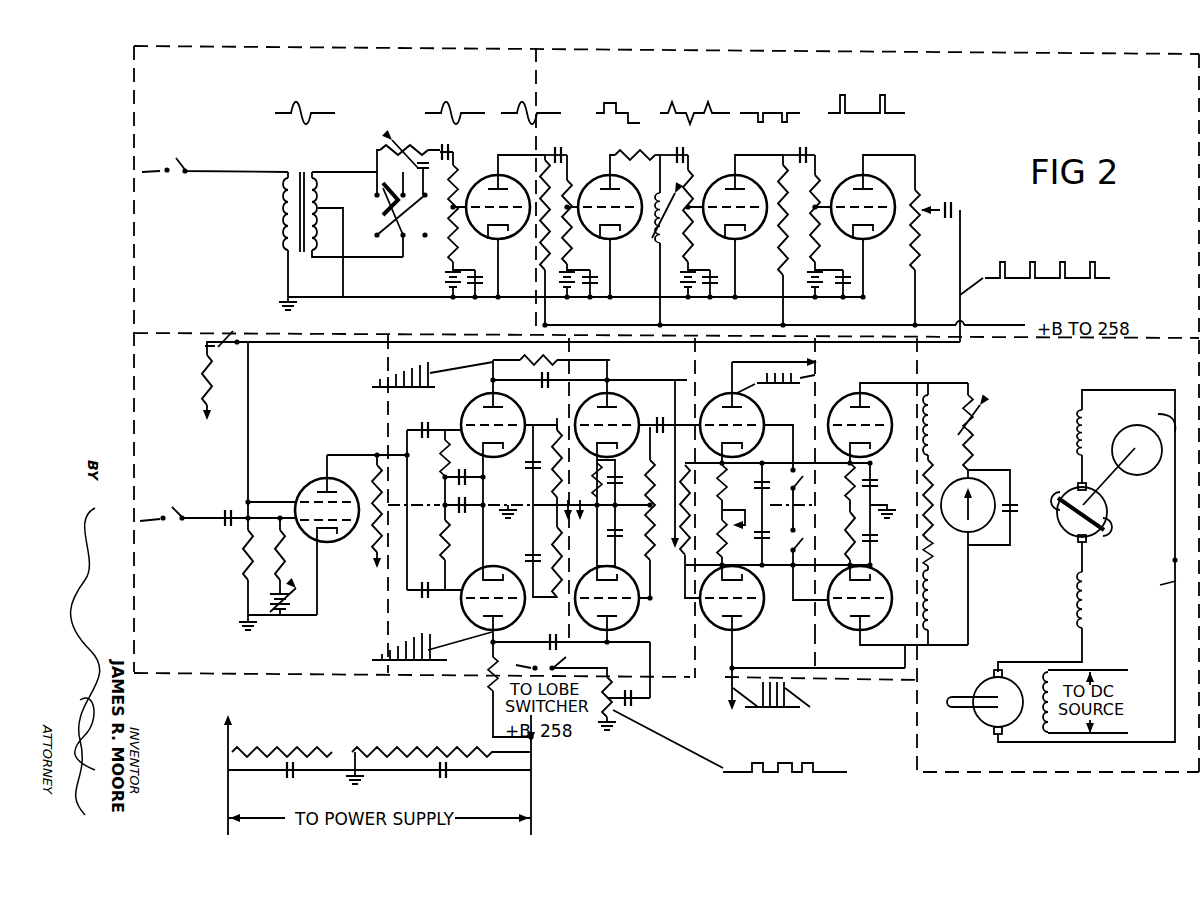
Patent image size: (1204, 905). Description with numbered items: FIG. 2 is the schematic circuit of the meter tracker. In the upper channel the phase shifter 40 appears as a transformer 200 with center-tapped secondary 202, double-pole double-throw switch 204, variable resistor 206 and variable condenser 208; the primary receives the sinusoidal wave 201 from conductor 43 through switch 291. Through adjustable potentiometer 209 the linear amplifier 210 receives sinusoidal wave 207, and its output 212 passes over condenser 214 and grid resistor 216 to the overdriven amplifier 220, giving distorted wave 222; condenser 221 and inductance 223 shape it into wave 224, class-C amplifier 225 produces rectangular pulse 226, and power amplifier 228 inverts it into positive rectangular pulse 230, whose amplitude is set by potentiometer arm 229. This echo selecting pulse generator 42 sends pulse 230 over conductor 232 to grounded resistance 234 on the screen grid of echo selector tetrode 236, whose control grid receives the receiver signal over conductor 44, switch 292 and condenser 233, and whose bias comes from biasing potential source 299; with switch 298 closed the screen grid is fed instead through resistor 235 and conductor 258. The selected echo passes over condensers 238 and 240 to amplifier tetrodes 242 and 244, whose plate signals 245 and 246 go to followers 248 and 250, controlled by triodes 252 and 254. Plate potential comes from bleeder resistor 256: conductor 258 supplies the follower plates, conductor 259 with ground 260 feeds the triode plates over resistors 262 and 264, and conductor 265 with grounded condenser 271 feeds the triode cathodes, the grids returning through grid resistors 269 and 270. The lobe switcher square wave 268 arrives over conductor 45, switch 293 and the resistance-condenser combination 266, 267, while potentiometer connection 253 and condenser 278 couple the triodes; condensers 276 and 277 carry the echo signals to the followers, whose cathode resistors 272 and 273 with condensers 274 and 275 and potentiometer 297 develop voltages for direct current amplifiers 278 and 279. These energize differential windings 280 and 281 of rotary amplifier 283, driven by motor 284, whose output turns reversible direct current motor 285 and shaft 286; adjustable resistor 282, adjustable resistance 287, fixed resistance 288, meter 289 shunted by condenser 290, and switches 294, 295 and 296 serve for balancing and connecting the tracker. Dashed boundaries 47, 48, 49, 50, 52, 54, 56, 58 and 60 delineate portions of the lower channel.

The phase shifter 40 is at (170, 70).
The echo selecting pulse generator 42 is at (573, 73).
The conductor 43 is at (151, 187).
The conductor 44 is at (146, 540).
The conductor 45 is at (521, 657).
The amplifier section 47 is at (163, 353).
The phase inverter section 48 is at (418, 363).
The section boundary 49 is at (442, 524).
The section 50 is at (726, 363).
The section 52 is at (720, 683).
The section 54 is at (601, 363).
The section 56 is at (843, 353).
The section 58 is at (840, 670).
The motor control section 60 is at (947, 368).
The transformer 200 is at (294, 172).
The sinusoidal wave 201 is at (325, 110).
The center-tapped secondary 202 is at (318, 183).
The double-pole double-throw switch 204 is at (392, 214).
The variable resistor 206 is at (395, 150).
The sinusoidal wave 207 is at (461, 150).
The variable condenser 208 is at (435, 162).
The adjustable potentiometer 209 is at (450, 226).
The linear amplifier 210 is at (500, 241).
The sinusoidal wave output 212 is at (538, 152).
The condenser 214 is at (569, 148).
The grid resistor 216 is at (583, 227).
The overdriven amplifier 220 is at (604, 227).
The condenser 221 is at (673, 148).
The distorted wave 222 is at (650, 152).
The inductance 223 is at (658, 192).
The voltage wave 224 is at (692, 152).
The class-C overdriven amplifier 225 is at (734, 241).
The rectangular voltage pulse 226 is at (775, 152).
The class-A power amplifier tube 228 is at (851, 185).
The potentiometer arm 229 is at (926, 207).
The rectangular voltage pulse 230 is at (882, 155).
The conductor 232 is at (278, 345).
The condenser 233 is at (249, 532).
The grounded resistance 234 is at (245, 570).
The resistor 235 is at (200, 365).
The echo selector tetrode 236 is at (306, 483).
The condenser 238 is at (423, 427).
The condenser 240 is at (434, 528).
The tetrode 242 is at (472, 408).
The tetrode 244 is at (504, 653).
The voltage signal 245 is at (383, 385).
The voltage signal 246 is at (378, 662).
The follower 248 is at (765, 416).
The follower 250 is at (797, 653).
The triode 252 is at (624, 407).
The potentiometer connection 253 is at (674, 552).
The triode 254 is at (640, 630).
The bleeder resistor 256 is at (405, 750).
The conductor 258 is at (733, 383).
The conductor 259 is at (801, 509).
The ground 260 is at (362, 772).
The resistor 262 is at (736, 512).
The resistor 264 is at (684, 551).
The conductor 265 is at (235, 748).
The grounded resistance 266 is at (622, 697).
The condenser 267 is at (637, 683).
The square wave voltage 268 is at (813, 767).
The grid resistor 269 is at (599, 513).
The grid resistor 270 is at (637, 514).
The grounded condenser 271 is at (285, 773).
The cathode resistor 272 is at (741, 538).
The cathode resistor 273 is at (738, 481).
The condenser 274 is at (775, 522).
The condenser 275 is at (775, 514).
The condenser 276 is at (570, 637).
The condenser 277 is at (590, 371).
The direct current amplifier 278 is at (887, 396).
The direct current amplifier 279 is at (891, 617).
The differential winding 280 is at (946, 461).
The second differential field winding 281 is at (947, 607).
The adjustable potentiometer type resistor 282 is at (930, 532).
The rotary amplifier 283 is at (1088, 533).
The motor 284 is at (1135, 445).
The reversible direct current motor 285 is at (987, 690).
The shaft 286 is at (968, 712).
The adjustable resistance 287 is at (978, 407).
The fixed resistance 288 is at (975, 462).
The direct current meter 289 is at (980, 528).
The condenser 290 is at (1014, 513).
The switch 291 is at (188, 167).
The switch 292 is at (180, 513).
The switch 293 is at (569, 660).
The switch 294 is at (1147, 587).
The switch 295 is at (800, 463).
The switch 296 is at (802, 545).
The potentiometer 297 is at (716, 514).
The switch 298 is at (219, 330).
The biasing potential source 299 is at (293, 565).